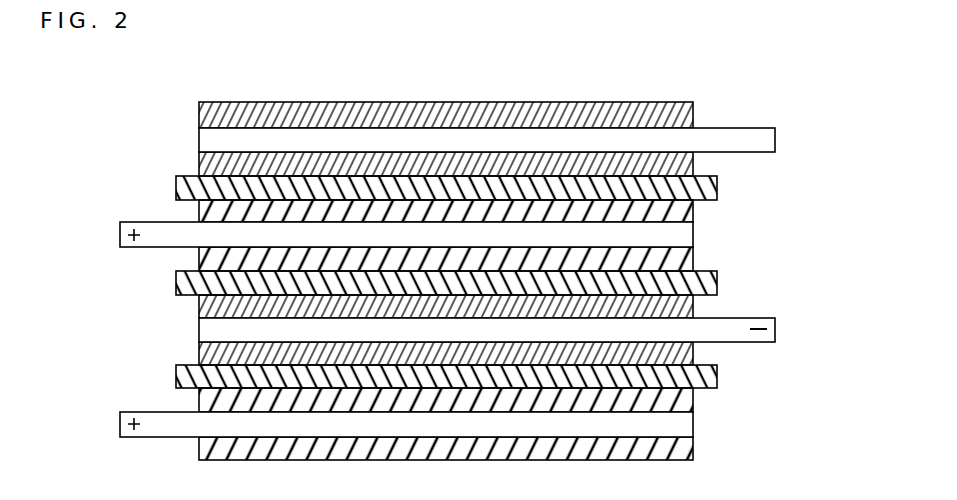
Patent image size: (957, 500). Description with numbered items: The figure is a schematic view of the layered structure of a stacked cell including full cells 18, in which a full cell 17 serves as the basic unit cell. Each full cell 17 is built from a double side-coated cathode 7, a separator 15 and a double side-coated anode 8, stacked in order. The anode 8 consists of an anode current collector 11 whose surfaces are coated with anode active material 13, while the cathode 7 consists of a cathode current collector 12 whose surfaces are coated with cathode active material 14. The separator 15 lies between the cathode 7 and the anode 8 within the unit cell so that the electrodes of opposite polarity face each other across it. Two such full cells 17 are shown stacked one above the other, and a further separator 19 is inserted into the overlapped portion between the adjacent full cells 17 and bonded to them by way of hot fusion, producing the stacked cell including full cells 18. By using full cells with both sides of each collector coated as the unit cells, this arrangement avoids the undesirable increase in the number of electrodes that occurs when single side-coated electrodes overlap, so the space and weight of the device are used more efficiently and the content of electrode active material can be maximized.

The cathode 7 is at (770, 202).
The anode 8 is at (848, 90).
The anode current collector 11 is at (752, 142).
The cathode current collector 12 is at (693, 232).
The anode active material 13 is at (693, 112).
The cathode active material 14 is at (693, 210).
The separator 15 is at (717, 186).
The full cell 17 is at (107, 103).
The stacked cell including full cells 18 is at (822, 242).
The separator 19 is at (176, 283).